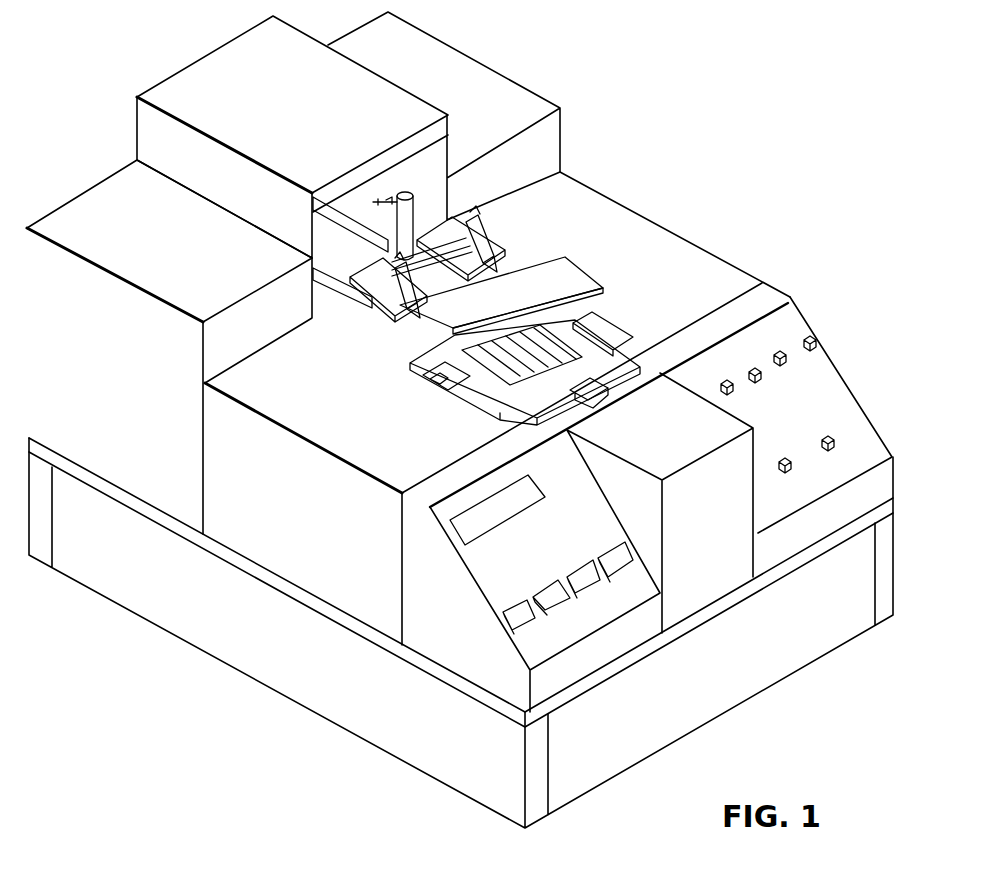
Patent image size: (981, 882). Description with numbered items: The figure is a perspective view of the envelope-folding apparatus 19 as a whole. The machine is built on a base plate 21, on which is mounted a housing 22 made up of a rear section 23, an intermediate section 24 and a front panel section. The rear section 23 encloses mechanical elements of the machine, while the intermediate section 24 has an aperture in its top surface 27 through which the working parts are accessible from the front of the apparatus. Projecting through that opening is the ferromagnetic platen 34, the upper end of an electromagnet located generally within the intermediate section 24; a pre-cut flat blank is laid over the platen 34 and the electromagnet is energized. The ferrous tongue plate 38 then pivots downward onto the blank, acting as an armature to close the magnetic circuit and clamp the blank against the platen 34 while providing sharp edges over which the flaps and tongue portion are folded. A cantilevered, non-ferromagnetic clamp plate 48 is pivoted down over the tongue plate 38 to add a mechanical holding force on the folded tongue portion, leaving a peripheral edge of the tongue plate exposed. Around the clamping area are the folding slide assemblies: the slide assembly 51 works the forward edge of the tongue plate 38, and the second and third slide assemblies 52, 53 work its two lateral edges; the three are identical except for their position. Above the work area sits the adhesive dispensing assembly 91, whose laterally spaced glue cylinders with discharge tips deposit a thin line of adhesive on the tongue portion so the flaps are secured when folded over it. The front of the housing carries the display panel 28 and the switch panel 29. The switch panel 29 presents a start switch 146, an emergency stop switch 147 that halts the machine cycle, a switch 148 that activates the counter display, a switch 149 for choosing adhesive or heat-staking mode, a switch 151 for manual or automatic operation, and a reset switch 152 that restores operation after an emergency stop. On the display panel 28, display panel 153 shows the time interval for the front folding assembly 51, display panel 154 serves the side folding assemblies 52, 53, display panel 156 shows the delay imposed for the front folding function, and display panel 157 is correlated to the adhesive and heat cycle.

The apparatus 19 is at (605, 190).
The base plate 21 is at (360, 624).
The housing 22 is at (67, 206).
The rear section 23 is at (453, 72).
The intermediate section 24 is at (658, 250).
The top surface 27 is at (700, 303).
The display panel 28 is at (530, 561).
The switch panel 29 is at (830, 404).
The ferromagnetic platen 34 is at (533, 376).
The ferrous tongue plate 38 is at (573, 292).
The clamp plate 48 is at (526, 270).
The slide assembly 51 is at (574, 402).
The slide assembly 52 is at (604, 334).
The slide assembly 53 is at (420, 381).
The adhesive dispensing assembly 91 is at (455, 215).
The start switch 146 is at (835, 446).
The emergency stop switch 147 is at (786, 474).
The counter display switch 148 is at (720, 388).
The mode select switch 149 is at (750, 372).
The manual/automatic switch 151 is at (777, 354).
The reset switch 152 is at (812, 338).
The display panel 153 is at (510, 617).
The display panel 154 is at (553, 600).
The display panel 156 is at (585, 573).
The display panel 157 is at (620, 558).